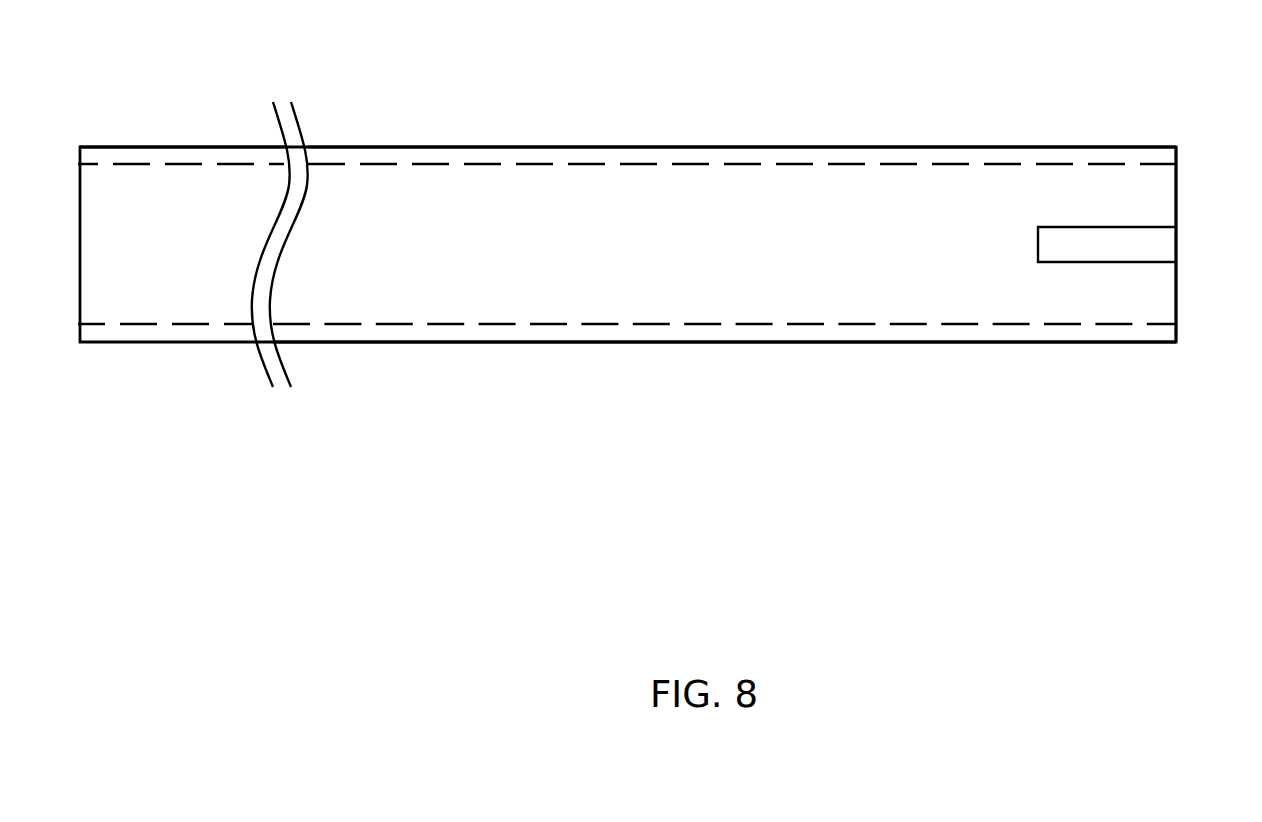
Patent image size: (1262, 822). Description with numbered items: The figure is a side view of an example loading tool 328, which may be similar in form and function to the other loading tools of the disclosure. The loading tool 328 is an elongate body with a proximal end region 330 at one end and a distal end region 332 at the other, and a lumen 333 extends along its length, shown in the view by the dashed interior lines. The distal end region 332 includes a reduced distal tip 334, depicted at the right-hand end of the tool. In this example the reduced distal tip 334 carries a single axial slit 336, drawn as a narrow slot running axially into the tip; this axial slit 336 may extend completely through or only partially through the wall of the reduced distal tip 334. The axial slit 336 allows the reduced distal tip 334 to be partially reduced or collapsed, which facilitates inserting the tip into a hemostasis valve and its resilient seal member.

The loading tool 328 is at (600, 96).
The proximal end region 330 is at (183, 147).
The distal end region 332 is at (473, 147).
The lumen 333 is at (829, 288).
The reduced distal tip 334 is at (1135, 138).
The single axial slit 336 is at (1141, 243).